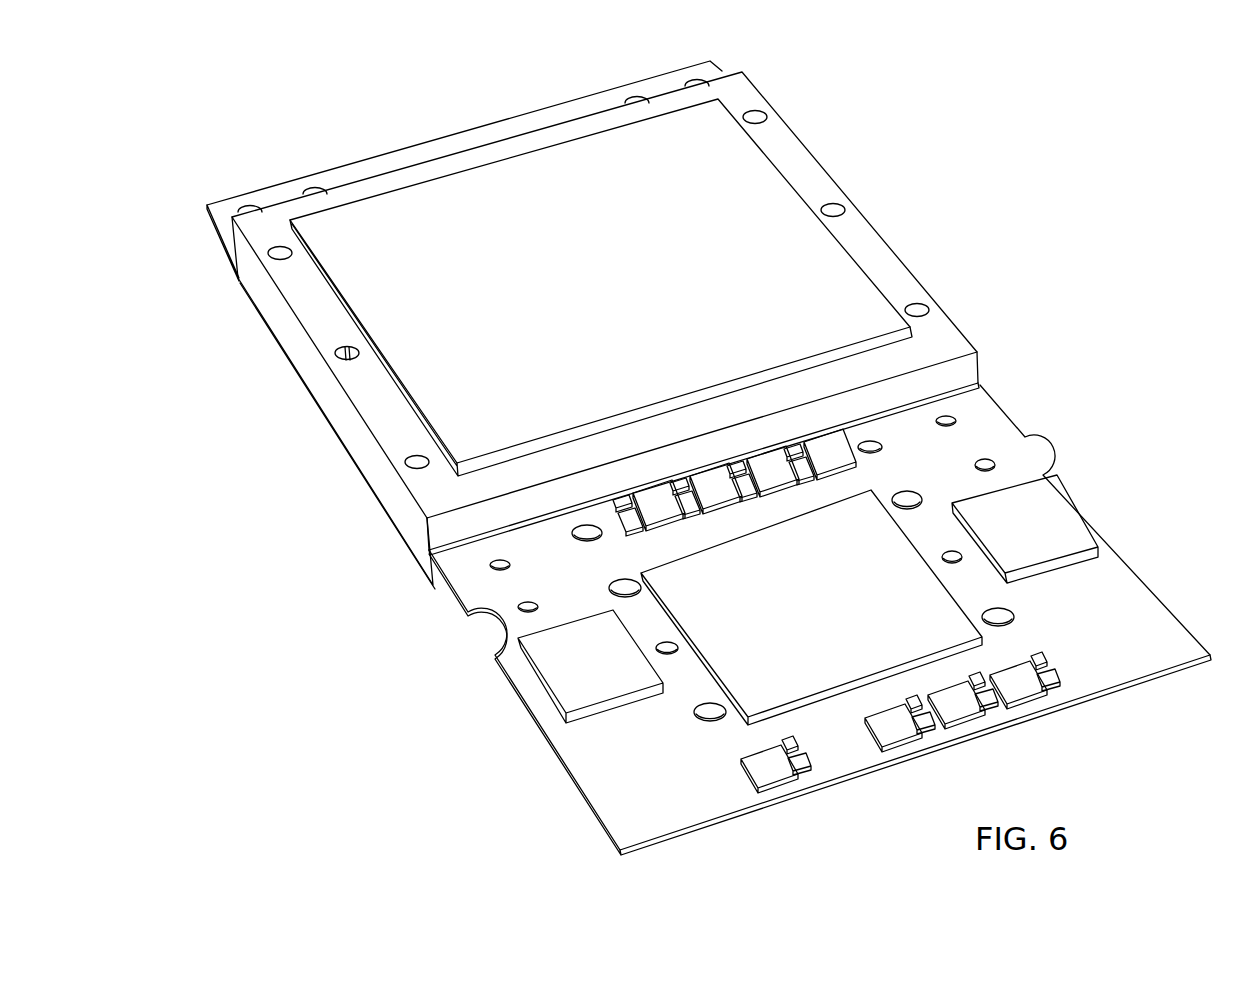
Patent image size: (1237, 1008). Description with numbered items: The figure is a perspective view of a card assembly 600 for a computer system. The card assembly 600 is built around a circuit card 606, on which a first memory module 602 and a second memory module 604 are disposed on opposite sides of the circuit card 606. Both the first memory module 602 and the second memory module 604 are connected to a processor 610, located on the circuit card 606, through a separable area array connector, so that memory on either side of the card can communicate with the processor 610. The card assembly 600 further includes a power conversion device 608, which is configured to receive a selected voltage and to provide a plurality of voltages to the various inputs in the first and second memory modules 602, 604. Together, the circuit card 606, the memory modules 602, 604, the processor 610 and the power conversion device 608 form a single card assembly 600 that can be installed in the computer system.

The card assembly 600 is at (300, 146).
The first memory module 602 is at (320, 323).
The second memory module 604 is at (348, 458).
The circuit card 606 is at (487, 577).
The power conversion device 608 is at (982, 384).
The processor 610 is at (845, 614).